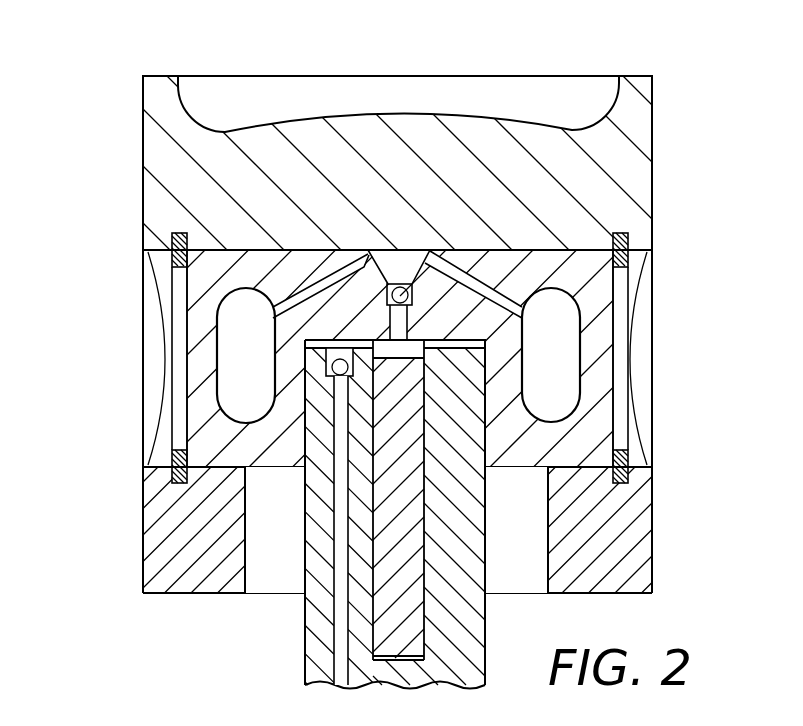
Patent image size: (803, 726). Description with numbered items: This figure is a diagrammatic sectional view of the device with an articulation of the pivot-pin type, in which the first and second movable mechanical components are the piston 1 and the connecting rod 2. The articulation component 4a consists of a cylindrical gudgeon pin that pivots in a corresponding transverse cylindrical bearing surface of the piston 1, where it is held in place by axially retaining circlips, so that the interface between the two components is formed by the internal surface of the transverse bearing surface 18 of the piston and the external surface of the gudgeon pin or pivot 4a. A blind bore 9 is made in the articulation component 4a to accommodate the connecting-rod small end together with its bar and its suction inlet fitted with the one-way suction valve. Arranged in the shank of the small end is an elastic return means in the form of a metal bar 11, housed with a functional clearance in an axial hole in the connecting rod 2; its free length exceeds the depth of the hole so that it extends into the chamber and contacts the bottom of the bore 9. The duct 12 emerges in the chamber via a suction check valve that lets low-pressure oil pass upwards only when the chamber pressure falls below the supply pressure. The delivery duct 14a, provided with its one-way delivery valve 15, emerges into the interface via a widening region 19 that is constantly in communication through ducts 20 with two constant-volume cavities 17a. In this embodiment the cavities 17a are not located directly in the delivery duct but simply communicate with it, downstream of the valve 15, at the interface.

The piston 1 is at (620, 140).
The connecting rod 2 is at (305, 640).
The articulation component 4a is at (305, 495).
The blind bore 9 is at (487, 437).
The metal bar 11 is at (400, 570).
The duct 12 is at (336, 608).
The delivery duct 14a is at (392, 327).
The one-way delivery valve 15 is at (383, 291).
The constant-volume cavities 17a is at (230, 370).
The transverse bearing surface 18 is at (228, 245).
The widening region 19 is at (400, 258).
The ducts 20 is at (503, 290).